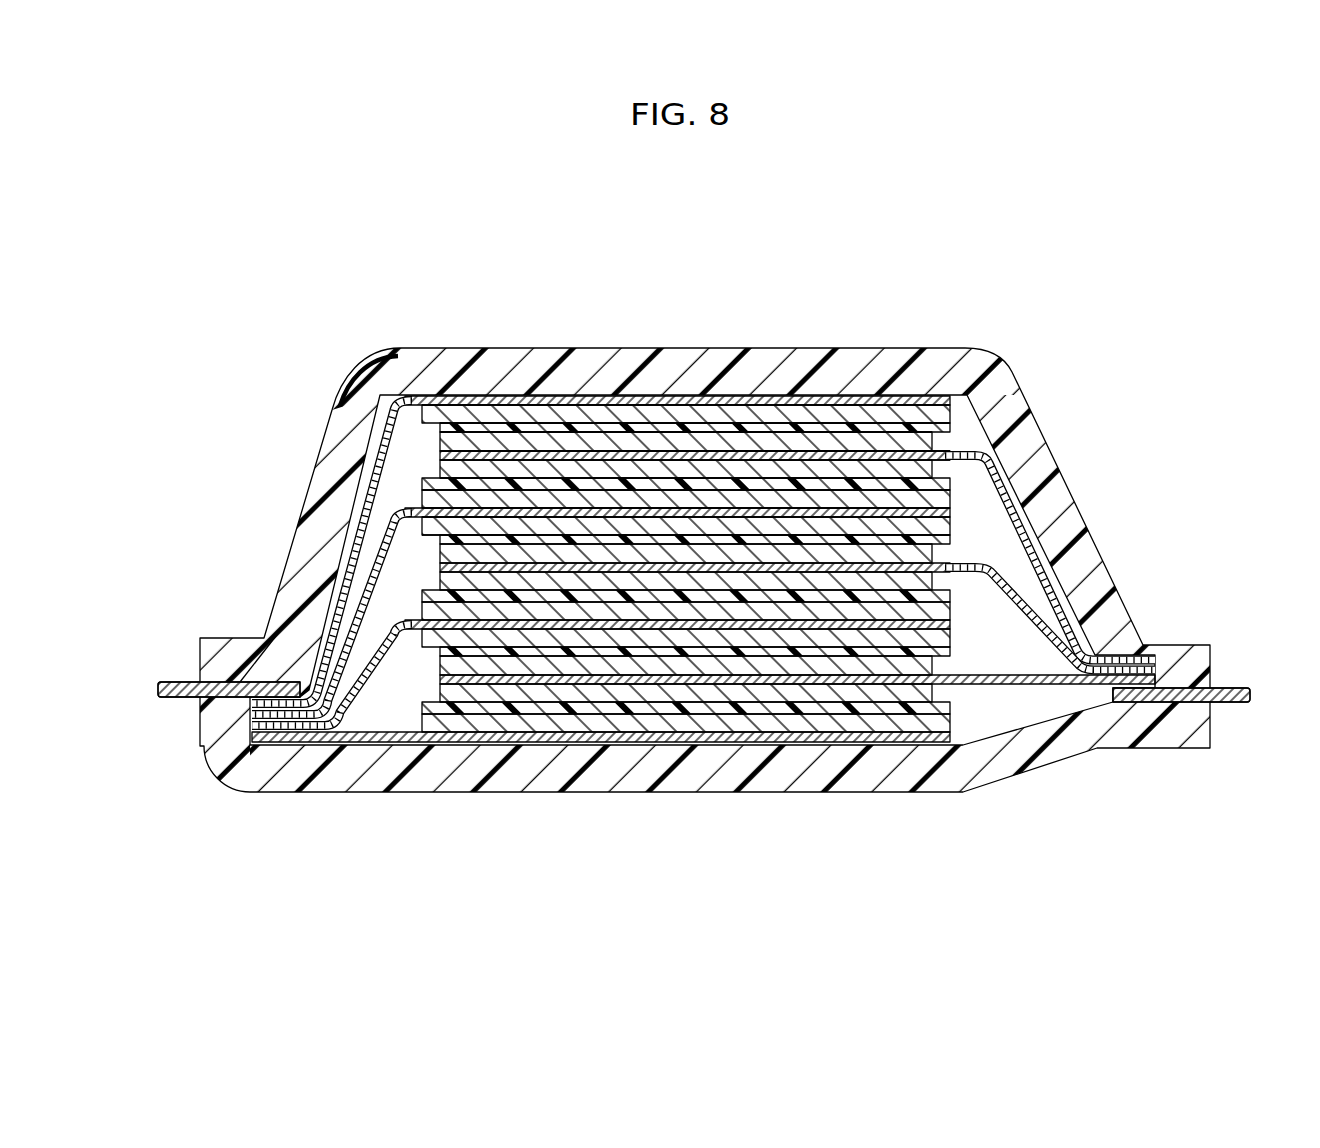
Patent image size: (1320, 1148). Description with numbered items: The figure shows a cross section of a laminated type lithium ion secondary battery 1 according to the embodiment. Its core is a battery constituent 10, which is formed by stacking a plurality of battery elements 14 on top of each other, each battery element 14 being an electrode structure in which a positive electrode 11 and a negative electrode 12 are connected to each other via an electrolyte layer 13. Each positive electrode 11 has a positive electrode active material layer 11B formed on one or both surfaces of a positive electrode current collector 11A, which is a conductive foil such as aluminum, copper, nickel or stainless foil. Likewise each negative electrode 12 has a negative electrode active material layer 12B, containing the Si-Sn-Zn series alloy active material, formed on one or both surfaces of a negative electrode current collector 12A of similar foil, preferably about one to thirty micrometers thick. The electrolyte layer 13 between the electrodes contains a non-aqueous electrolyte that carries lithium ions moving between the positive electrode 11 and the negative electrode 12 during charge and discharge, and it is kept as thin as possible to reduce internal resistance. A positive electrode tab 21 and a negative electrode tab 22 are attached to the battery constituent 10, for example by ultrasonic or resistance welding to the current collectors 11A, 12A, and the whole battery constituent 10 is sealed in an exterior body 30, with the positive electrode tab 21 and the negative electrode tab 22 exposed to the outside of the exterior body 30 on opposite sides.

The lithium ion secondary battery 1 is at (289, 321).
The battery constituent 10 is at (688, 547).
The positive electrode 11 is at (778, 284).
The positive electrode current collector 11A is at (695, 455).
The positive electrode active material layer 11B is at (585, 441).
The negative electrode 12 is at (948, 284).
The negative electrode current collector 12A is at (857, 512).
The negative electrode active material layer 12B is at (485, 410).
The electrolyte layer 13 is at (540, 426).
The battery element 14 is at (613, 284).
The positive electrode tab 21 is at (1228, 688).
The negative electrode tab 22 is at (180, 683).
The exterior body 30 is at (1185, 645).